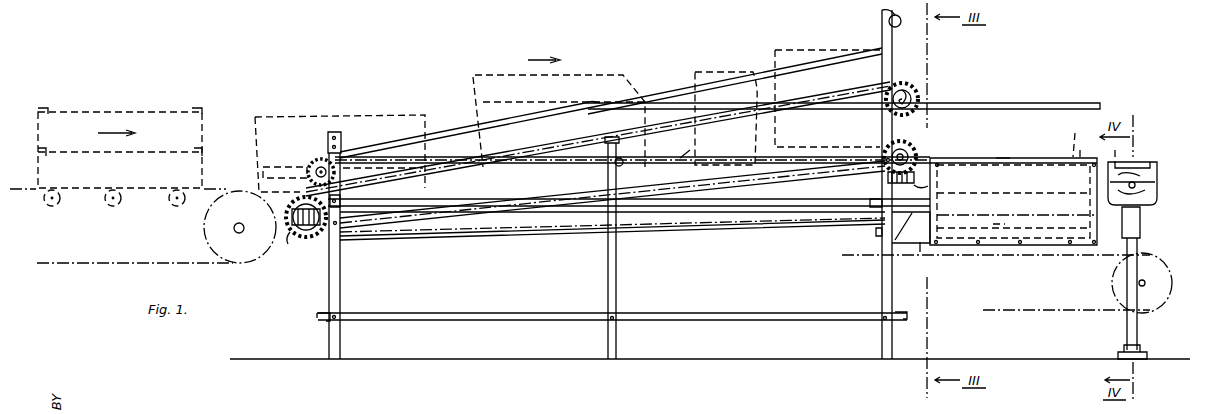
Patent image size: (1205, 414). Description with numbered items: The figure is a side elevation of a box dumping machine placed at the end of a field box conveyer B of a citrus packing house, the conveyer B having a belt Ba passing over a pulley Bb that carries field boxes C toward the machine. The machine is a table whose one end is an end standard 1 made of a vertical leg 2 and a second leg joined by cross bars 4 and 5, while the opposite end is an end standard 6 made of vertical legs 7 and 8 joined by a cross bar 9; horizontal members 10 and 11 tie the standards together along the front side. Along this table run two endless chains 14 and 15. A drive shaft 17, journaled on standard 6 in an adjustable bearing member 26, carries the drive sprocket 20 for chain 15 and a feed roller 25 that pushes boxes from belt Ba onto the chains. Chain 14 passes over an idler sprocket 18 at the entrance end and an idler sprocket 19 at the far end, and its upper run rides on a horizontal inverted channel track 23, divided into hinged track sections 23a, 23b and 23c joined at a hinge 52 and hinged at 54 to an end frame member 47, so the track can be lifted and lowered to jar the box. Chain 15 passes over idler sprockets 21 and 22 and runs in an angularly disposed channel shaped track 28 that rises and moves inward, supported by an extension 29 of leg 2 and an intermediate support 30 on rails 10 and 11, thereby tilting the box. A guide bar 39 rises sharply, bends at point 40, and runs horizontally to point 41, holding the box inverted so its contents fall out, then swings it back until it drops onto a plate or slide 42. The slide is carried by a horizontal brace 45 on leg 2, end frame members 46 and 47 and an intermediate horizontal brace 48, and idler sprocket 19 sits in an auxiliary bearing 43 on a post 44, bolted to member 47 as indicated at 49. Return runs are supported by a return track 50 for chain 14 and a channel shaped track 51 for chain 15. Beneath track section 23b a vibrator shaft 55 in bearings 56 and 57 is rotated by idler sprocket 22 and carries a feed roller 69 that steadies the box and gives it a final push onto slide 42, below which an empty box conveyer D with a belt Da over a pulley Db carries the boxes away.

The end standard 1 is at (879, 283).
The vertical leg 2 is at (878, 232).
The cross bar 4 is at (900, 313).
The cross bar 5 is at (878, 204).
The end standard 6 is at (348, 303).
The vertical leg 7 is at (338, 273).
The vertical leg 8 is at (345, 150).
The cross bar 9 is at (318, 318).
The horizontal member 10 is at (703, 210).
The horizontal member 11 is at (668, 312).
The endless chain 14 is at (731, 152).
The endless chain 15 is at (928, 127).
The drive shaft 17 is at (297, 240).
The idler sprocket 18 is at (312, 157).
The idler sprocket 19 is at (1131, 168).
The drive sprocket 20 is at (322, 262).
The idler sprocket 21 is at (906, 86).
The idler sprocket 22 is at (930, 171).
The track 23 is at (452, 150).
The track section 23a is at (532, 168).
The track section 23b is at (681, 159).
The track section 23c is at (1001, 157).
The feed roller 25 is at (290, 240).
The adjustable bearing member 26 is at (282, 201).
The channel-shaped track 28 is at (587, 141).
The extension 29 is at (882, 36).
The intermediate support 30 is at (607, 186).
The guide bar 39 is at (1057, 100).
The point 40 is at (593, 101).
The point 41 is at (940, 101).
The plate or slide 42 is at (1022, 176).
The auxiliary bearing 43 is at (1132, 185).
The leg or post 44 is at (1127, 325).
The horizontal brace 45 is at (920, 252).
The end frame member 46 is at (945, 226).
The end frame member 47 is at (1095, 226).
The intermediate horizontal brace 48 is at (1046, 196).
The bolting 49 is at (1130, 224).
The return track 50 is at (727, 233).
The channel-shaped track 51 is at (725, 182).
The hinge 52 is at (622, 165).
The hinge 54 is at (1075, 155).
The vibrator shaft 55 is at (893, 145).
The bearing 56 is at (918, 137).
The bearing 57 is at (918, 208).
The feed roller 69 is at (928, 183).
The field box conveyer B is at (85, 212).
The belt Ba is at (140, 262).
The pulley Bb is at (205, 246).
The field box C is at (797, 51).
The empty box conveyer D is at (1039, 317).
The belt Da is at (996, 282).
The pulley Db is at (1113, 296).